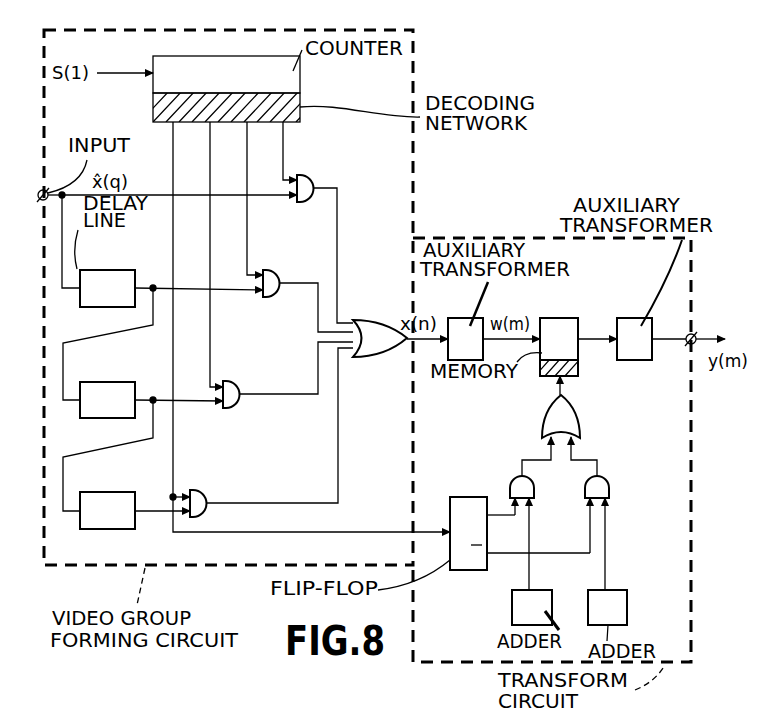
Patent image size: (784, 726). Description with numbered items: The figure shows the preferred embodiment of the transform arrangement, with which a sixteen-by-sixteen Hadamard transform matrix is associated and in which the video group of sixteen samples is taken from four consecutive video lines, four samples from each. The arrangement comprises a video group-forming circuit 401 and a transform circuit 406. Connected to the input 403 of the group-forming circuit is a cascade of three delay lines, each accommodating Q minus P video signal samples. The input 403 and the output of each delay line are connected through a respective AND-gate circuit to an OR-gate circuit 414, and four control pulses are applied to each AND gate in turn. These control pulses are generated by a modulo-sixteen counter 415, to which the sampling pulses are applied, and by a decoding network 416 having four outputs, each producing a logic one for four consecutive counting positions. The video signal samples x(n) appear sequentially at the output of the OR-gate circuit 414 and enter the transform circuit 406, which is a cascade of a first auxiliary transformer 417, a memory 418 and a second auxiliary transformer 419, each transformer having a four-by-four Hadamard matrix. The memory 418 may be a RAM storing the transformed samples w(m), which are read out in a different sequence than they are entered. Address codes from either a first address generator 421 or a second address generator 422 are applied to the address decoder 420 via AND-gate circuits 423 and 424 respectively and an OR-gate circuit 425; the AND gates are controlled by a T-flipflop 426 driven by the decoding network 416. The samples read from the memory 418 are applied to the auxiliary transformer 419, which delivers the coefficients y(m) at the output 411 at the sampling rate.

The video group-forming circuit 401 is at (195, 570).
The input 403 is at (60, 182).
The transform circuit 406 is at (482, 665).
The output 411 is at (689, 334).
The OR-gate circuit 414 is at (366, 318).
The modulo-16 counter 415 is at (153, 64).
The decoding network 416 is at (153, 110).
The first auxiliary transformer 417 is at (460, 318).
The memory 418 is at (558, 318).
The second auxiliary transformer 419 is at (627, 318).
The address decoder 420 is at (578, 364).
The first address generator 421 is at (512, 608).
The second address generator 422 is at (627, 603).
The AND-gate circuit 423 is at (533, 490).
The AND-gate circuit 424 is at (609, 490).
The OR-gate circuit 425 is at (580, 420).
The T-flipflop 426 is at (465, 497).